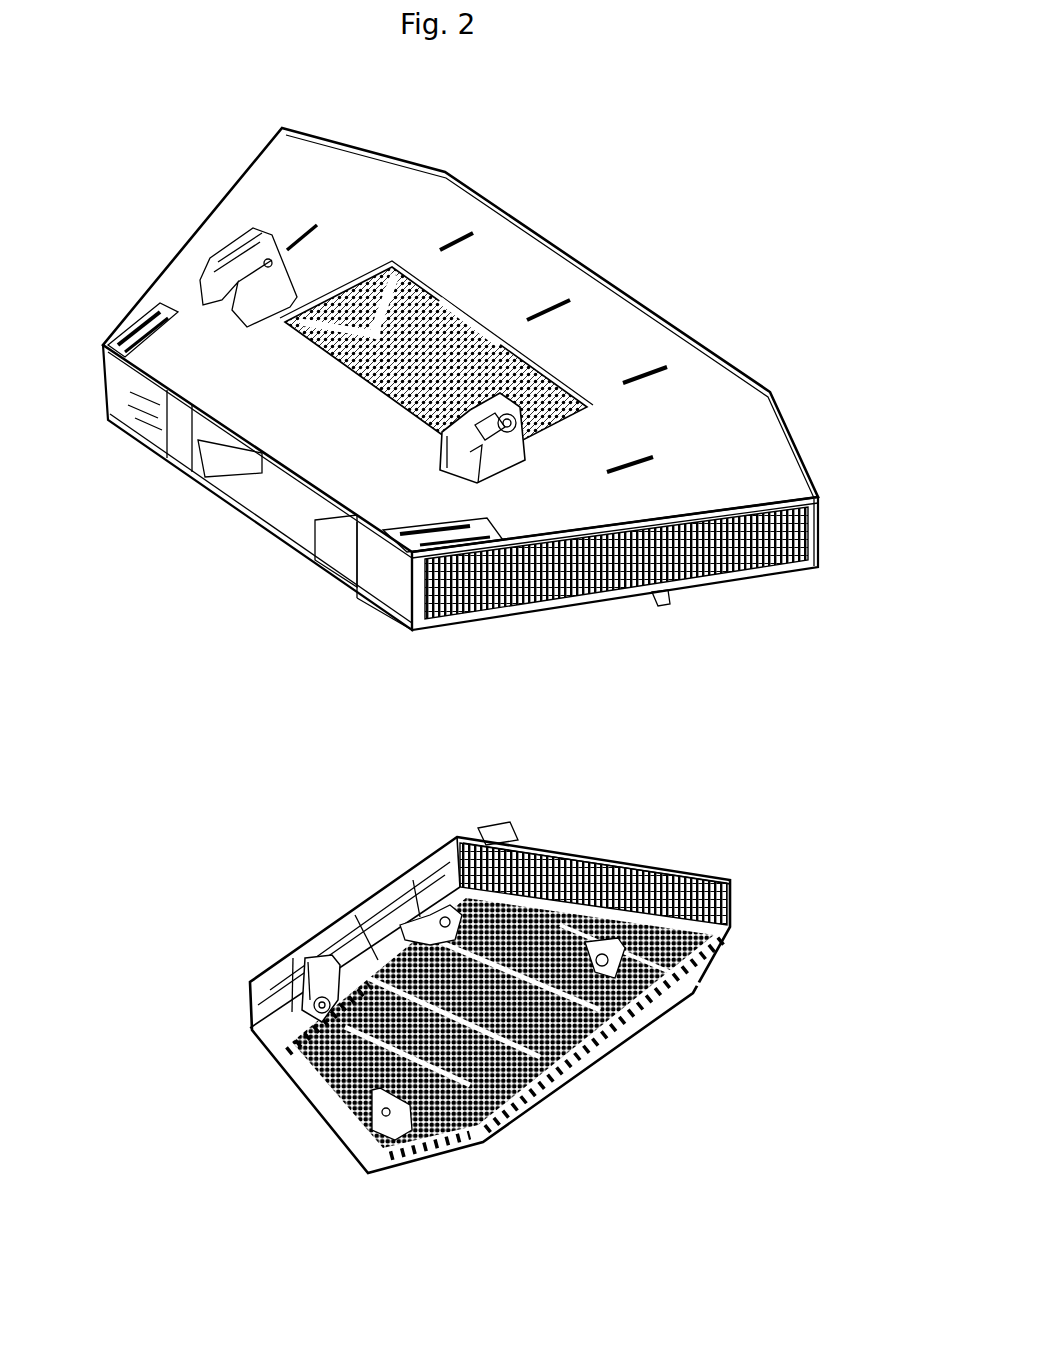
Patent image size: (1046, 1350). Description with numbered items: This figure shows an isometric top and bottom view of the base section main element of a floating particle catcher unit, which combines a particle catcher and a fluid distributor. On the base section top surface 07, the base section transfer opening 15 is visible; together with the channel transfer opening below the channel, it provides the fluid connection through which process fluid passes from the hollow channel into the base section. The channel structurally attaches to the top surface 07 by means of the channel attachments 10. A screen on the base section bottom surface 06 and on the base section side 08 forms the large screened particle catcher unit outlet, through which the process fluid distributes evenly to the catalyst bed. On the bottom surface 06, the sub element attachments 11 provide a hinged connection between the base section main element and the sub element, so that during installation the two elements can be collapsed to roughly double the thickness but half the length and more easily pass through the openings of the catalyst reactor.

The base section bottom surface 06 is at (490, 1021).
The base section top surface 07 is at (712, 460).
The base section side 08 is at (616, 716).
The channel attachment 10 is at (505, 447).
The sub element attachment 11 is at (305, 1012).
The base section transfer opening 15 is at (375, 375).